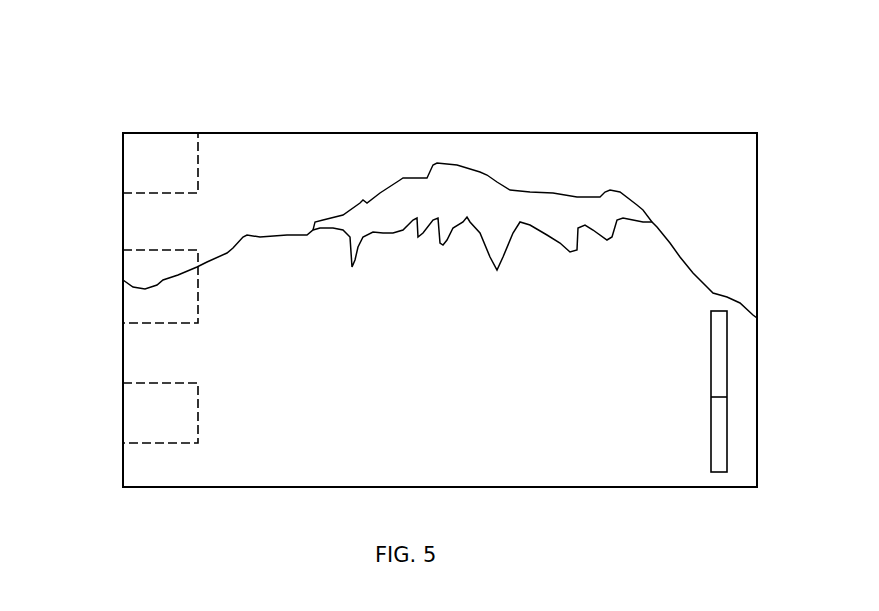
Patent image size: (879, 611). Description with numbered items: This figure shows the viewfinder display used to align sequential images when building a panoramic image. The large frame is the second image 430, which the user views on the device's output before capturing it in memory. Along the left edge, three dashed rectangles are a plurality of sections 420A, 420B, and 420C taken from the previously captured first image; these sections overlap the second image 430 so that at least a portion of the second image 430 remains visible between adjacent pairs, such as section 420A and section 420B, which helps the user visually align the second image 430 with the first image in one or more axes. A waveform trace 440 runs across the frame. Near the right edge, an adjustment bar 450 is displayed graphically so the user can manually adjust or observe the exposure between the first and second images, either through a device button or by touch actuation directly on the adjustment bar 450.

The second image 430 is at (357, 50).
The signal waveform trace 440 is at (358, 165).
The section 420A is at (131, 165).
The section 420B is at (131, 297).
The section 420C is at (131, 416).
The adjustment bar 450 is at (727, 397).